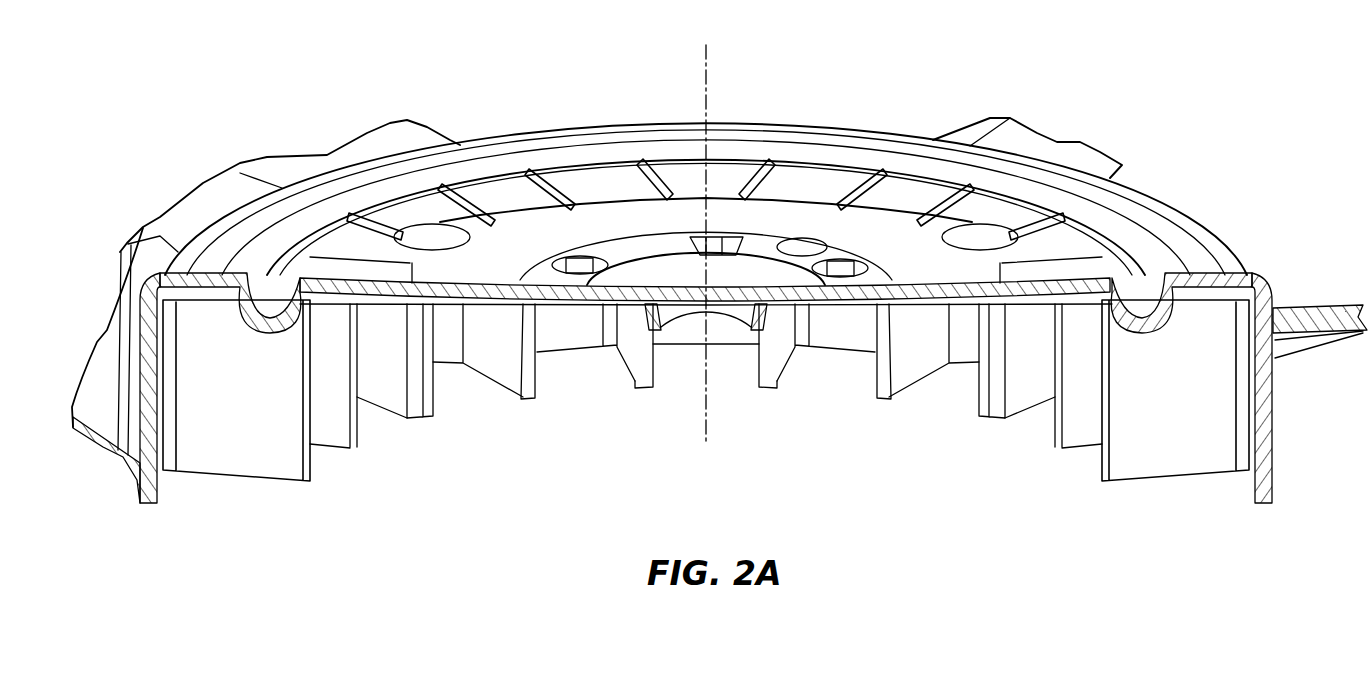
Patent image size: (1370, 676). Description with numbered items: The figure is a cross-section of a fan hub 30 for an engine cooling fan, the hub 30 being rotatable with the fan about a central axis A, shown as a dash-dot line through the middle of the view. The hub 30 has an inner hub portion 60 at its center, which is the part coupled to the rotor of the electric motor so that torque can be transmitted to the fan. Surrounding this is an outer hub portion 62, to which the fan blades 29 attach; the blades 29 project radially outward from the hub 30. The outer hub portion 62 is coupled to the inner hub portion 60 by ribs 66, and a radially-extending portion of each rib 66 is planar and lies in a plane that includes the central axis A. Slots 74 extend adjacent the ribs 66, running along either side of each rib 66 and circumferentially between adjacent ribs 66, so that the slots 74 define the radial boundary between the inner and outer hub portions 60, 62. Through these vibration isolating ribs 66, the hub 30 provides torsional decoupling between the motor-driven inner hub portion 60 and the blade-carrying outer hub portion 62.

The blades 29 is at (990, 140).
The hub 30 is at (500, 110).
The inner hub portion 60 is at (806, 262).
The outer hub portion 62 is at (1258, 423).
The ribs 66 is at (557, 182).
The slots 74 is at (458, 195).
The central axis A is at (703, 93).